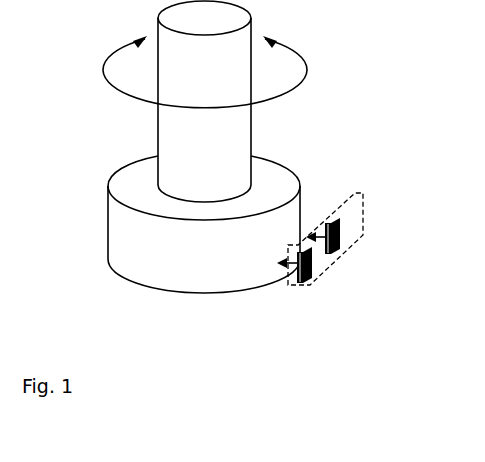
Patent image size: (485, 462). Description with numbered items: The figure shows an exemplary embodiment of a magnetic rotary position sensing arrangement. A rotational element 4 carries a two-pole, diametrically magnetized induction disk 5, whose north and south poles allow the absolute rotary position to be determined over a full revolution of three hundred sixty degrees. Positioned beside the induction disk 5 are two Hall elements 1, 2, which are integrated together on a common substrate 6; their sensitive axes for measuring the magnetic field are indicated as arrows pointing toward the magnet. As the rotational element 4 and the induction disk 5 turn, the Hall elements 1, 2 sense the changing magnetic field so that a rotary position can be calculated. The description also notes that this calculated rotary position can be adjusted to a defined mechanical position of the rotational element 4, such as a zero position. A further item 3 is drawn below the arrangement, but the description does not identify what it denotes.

The Hall element 1 is at (315, 260).
The Hall element 2 is at (342, 230).
The axis of rotation 3 is at (205, 308).
The rotational element 4 is at (178, 126).
The induction disk 5 is at (122, 218).
The common substrate 6 is at (362, 212).